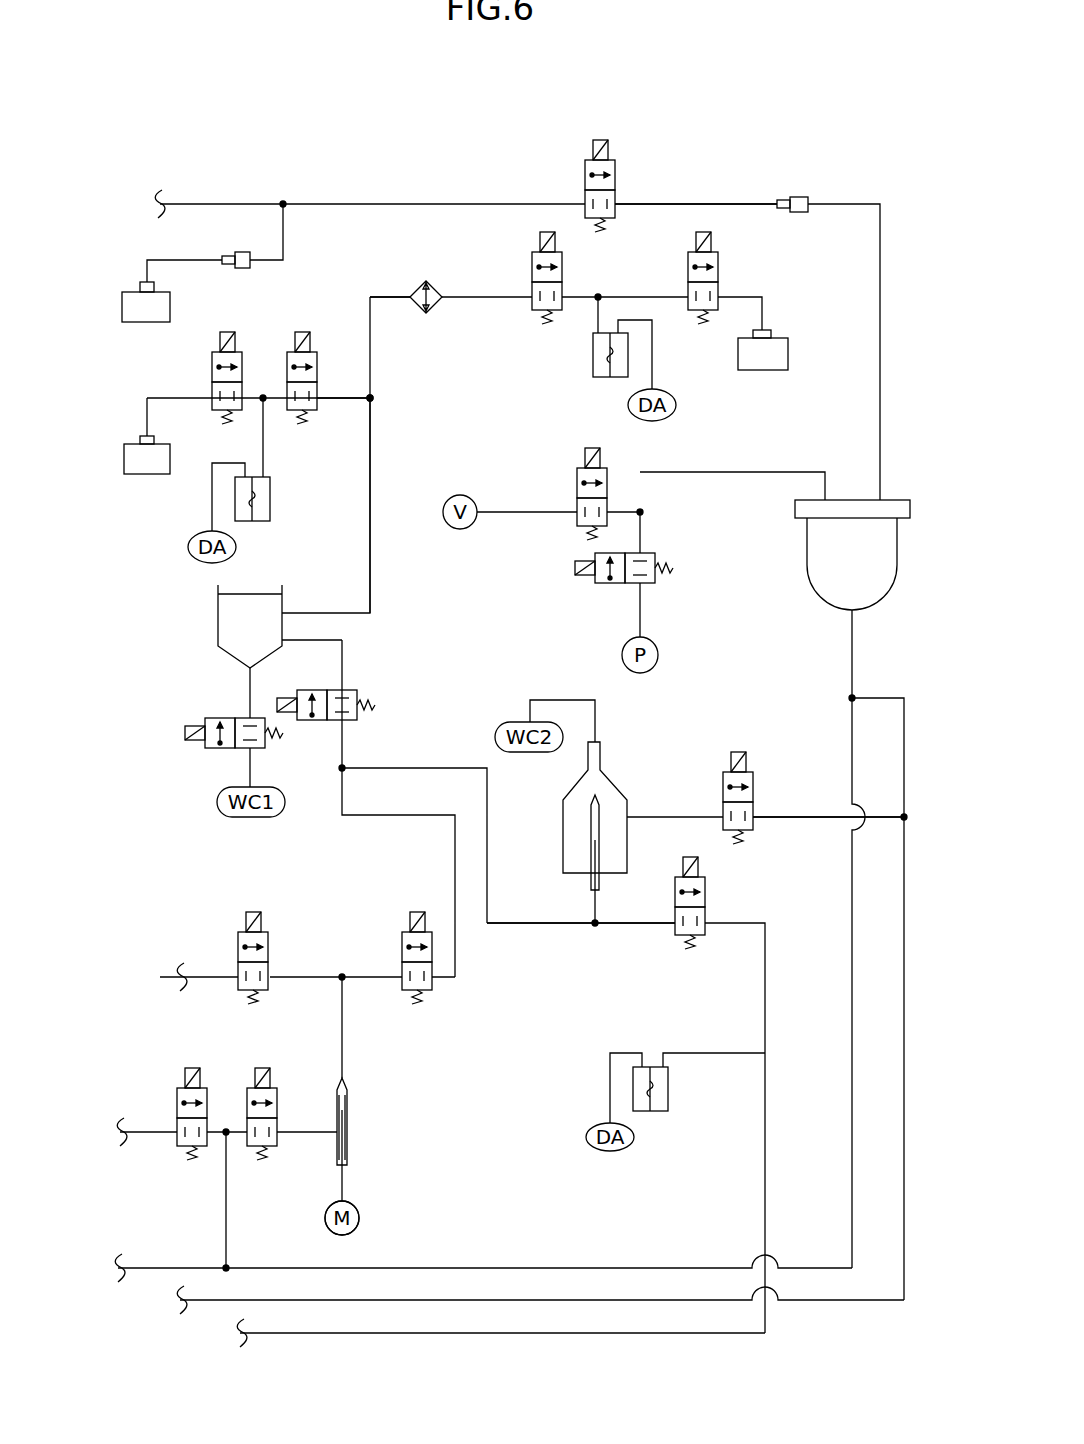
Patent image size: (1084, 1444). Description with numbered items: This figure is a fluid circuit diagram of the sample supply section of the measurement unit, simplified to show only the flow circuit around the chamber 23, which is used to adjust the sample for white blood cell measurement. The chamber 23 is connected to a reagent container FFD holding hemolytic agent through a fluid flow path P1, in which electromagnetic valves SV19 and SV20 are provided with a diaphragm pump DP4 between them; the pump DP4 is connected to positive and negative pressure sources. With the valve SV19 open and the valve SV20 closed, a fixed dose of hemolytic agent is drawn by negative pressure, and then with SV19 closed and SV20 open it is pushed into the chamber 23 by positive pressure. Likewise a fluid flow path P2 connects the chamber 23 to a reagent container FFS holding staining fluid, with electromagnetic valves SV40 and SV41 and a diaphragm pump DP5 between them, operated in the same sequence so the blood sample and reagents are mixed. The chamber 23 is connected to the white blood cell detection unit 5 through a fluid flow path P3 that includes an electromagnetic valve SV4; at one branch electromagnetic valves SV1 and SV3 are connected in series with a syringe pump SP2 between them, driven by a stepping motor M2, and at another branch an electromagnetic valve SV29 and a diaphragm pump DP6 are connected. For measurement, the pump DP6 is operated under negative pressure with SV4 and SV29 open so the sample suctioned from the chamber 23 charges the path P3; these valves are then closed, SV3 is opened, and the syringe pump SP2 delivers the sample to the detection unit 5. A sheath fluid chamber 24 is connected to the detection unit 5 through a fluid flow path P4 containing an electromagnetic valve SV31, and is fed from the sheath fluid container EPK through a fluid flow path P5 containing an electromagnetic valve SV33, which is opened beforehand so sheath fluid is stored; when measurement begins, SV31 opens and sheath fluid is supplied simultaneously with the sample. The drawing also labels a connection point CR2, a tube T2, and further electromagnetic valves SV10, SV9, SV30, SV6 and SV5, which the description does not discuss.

The electromagnetic valve SV33 is at (600, 176).
The fluid flow path P5 is at (707, 203).
The electromagnetic valve SV20 is at (515, 278).
The electromagnetic valve SV19 is at (734, 278).
The fluid flow path P1 is at (385, 294).
The fluid flow path P2 is at (343, 392).
The connection point CR2 is at (372, 396).
The diaphragm pump DP4 is at (592, 366).
The reagent container FFD is at (752, 372).
The sheath fluid container EPK is at (137, 322).
The electromagnetic valve SV40 is at (222, 362).
The electromagnetic valve SV41 is at (305, 362).
The reagent container FFS is at (140, 474).
The diaphragm pump DP5 is at (270, 500).
The chamber 23 is at (283, 600).
The tube T2 is at (372, 447).
The solenoid valve SV10 is at (561, 493).
The solenoid valve SV9 is at (647, 568).
The sheath fluid chamber 24 is at (818, 600).
The electromagnetic valve SV4 is at (326, 692).
The solenoid valve SV30 is at (234, 720).
The WBC detection unit 5 is at (618, 780).
The electromagnetic valve SV31 is at (737, 784).
The electromagnetic valve SV29 is at (680, 891).
The fluid flow path P4 is at (800, 820).
The fluid flow path P3 is at (550, 926).
The electromagnetic valve SV1 is at (256, 944).
The electromagnetic valve SV3 is at (411, 944).
The syringe pump SP2 is at (350, 1098).
The diaphragm pump DP6 is at (670, 1090).
The solenoid valve SV6 is at (186, 1131).
The solenoid valve SV5 is at (264, 1131).
The stepping motor M2 is at (360, 1218).